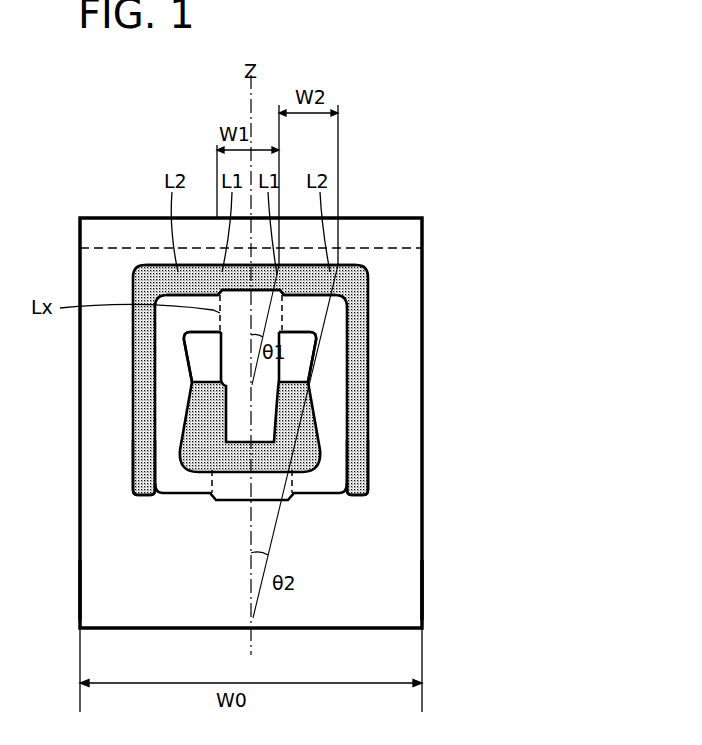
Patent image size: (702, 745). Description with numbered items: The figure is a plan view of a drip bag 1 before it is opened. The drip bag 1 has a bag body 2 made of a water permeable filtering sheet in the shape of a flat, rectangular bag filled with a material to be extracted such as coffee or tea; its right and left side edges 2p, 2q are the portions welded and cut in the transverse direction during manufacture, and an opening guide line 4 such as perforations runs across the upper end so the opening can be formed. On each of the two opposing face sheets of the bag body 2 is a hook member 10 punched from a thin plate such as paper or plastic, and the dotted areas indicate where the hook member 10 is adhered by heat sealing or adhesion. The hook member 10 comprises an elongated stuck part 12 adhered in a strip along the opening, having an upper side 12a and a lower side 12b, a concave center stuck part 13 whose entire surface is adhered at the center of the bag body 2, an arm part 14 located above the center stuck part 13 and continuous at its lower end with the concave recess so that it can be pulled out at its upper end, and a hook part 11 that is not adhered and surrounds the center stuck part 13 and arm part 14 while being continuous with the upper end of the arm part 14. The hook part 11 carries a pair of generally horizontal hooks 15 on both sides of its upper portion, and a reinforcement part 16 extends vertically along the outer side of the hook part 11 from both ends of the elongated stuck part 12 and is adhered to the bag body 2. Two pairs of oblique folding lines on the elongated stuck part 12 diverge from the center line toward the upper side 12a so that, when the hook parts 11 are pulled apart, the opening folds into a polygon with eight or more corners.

The drip bag 1 is at (608, 620).
The bag body 2 is at (398, 554).
The side edge 2p is at (422, 590).
The side edge 2q is at (80, 592).
The opening guide line 4 is at (115, 248).
The hook member 10 is at (333, 371).
The hook part 11 is at (333, 363).
The elongated stuck part 12 is at (318, 282).
The upper side of upper stuck part 12a is at (345, 264).
The lower side of upper stuck part 12b is at (325, 295).
The center stuck part 13 is at (292, 433).
The arm part 14 is at (265, 407).
The hook 15 is at (327, 345).
The reinforcement part 16 is at (358, 464).